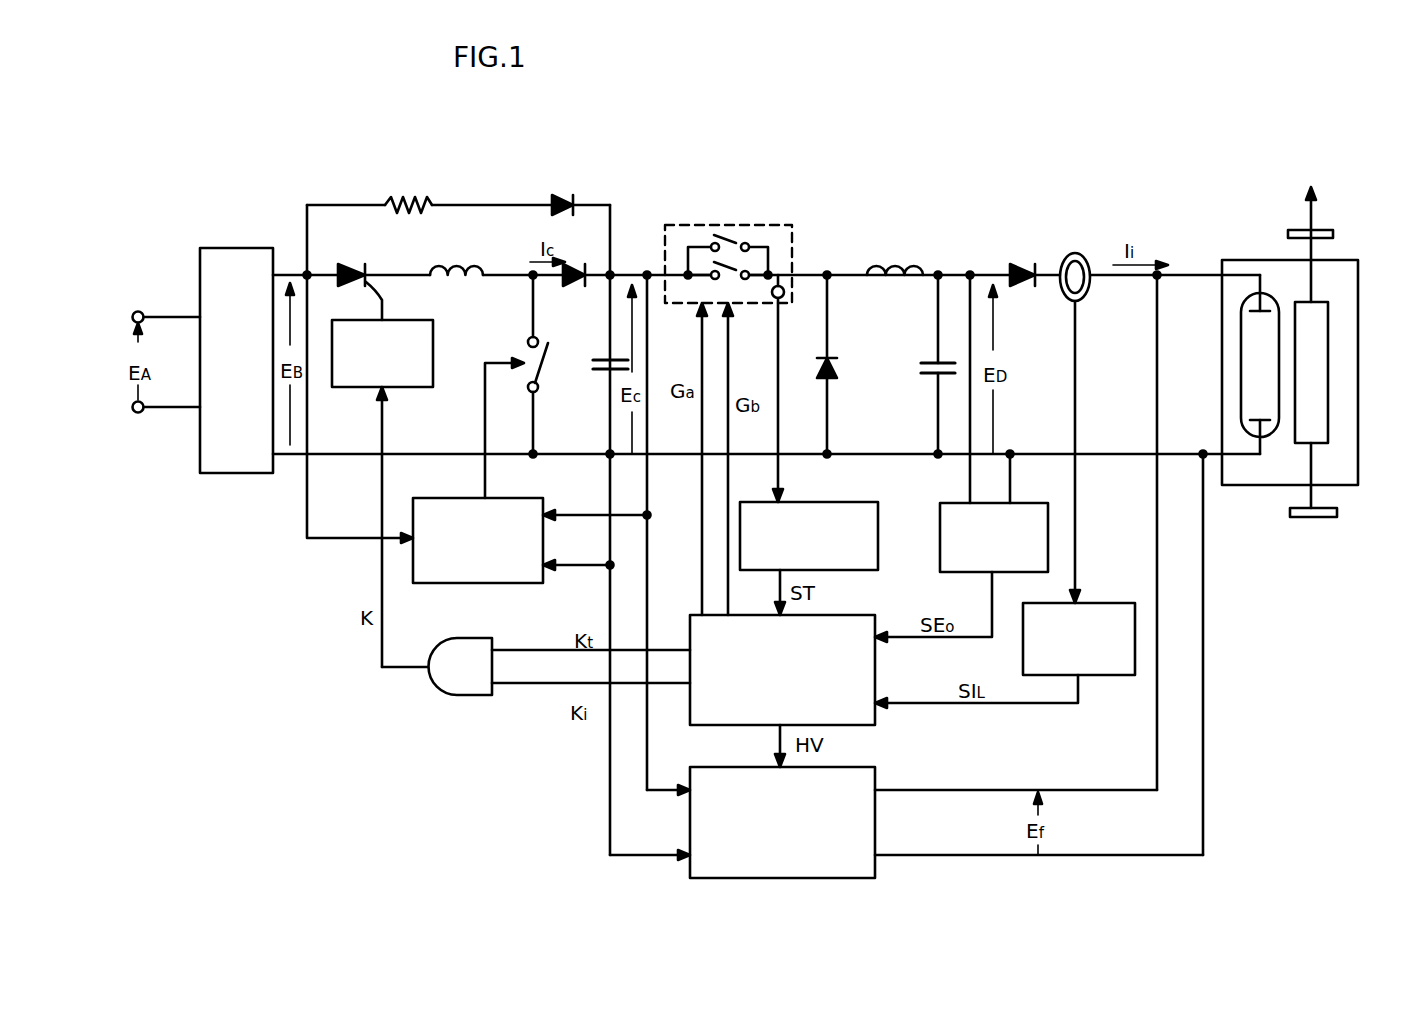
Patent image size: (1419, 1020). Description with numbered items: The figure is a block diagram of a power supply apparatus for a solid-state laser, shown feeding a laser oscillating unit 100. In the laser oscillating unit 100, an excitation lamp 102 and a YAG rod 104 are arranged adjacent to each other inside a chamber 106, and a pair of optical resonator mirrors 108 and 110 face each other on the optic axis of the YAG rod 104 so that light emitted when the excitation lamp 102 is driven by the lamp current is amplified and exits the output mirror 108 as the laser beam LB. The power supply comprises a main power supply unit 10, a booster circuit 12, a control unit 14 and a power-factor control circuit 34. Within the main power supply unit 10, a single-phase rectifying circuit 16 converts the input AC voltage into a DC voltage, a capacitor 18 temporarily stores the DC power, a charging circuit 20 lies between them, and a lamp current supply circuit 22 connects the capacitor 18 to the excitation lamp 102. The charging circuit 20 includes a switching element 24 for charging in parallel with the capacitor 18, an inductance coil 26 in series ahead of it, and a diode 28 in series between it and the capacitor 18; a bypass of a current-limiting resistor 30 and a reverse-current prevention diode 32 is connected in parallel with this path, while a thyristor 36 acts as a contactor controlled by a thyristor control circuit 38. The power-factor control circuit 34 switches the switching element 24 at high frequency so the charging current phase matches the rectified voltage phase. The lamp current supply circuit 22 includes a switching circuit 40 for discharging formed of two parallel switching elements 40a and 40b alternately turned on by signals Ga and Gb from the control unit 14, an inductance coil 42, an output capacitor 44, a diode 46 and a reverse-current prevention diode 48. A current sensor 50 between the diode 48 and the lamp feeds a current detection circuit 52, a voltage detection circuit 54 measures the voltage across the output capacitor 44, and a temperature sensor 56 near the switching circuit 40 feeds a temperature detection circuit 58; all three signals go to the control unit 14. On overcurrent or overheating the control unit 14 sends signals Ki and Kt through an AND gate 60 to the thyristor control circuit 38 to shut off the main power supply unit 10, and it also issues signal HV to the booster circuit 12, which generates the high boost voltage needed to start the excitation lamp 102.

The main power supply unit 10 is at (822, 188).
The booster circuit 12 is at (877, 781).
The control unit 14 is at (845, 614).
The single-phase rectifying circuit 16 is at (236, 248).
The capacitor 18 is at (596, 371).
The charging circuit 20 is at (490, 222).
The lamp current supply circuit 22 is at (945, 222).
The switching element for charging 24 is at (522, 353).
The inductance coil 26 is at (455, 266).
The diode 28 is at (580, 290).
The current-limiting resistor 30 is at (408, 205).
The reverse-current prevention diode 32 is at (560, 195).
The power-factor control circuit 34 is at (517, 583).
The thyristor 36 is at (350, 262).
The thyristor control circuit 38 is at (418, 388).
The switching circuit for discharging 40 is at (718, 253).
The switching element 40a is at (728, 237).
The switching element 40b is at (730, 282).
The inductance coil 42 is at (893, 258).
The output capacitor 44 is at (925, 363).
The diode 46 is at (840, 368).
The reverse-current prevention diode 48 is at (1022, 262).
The current sensor 50 is at (1076, 252).
The current detection circuit 52 is at (1100, 603).
The voltage detection circuit 54 is at (940, 522).
The temperature sensor 56 is at (784, 285).
The temperature detection circuit 58 is at (813, 501).
The AND gate 60 is at (463, 696).
The laser oscillating unit 100 is at (1218, 188).
The excitation lamp 102 is at (1240, 357).
The YAG rod 104 is at (1330, 313).
The chamber 106 is at (1228, 260).
The output mirror 108 is at (1290, 230).
The optical resonator mirror 110 is at (1300, 518).